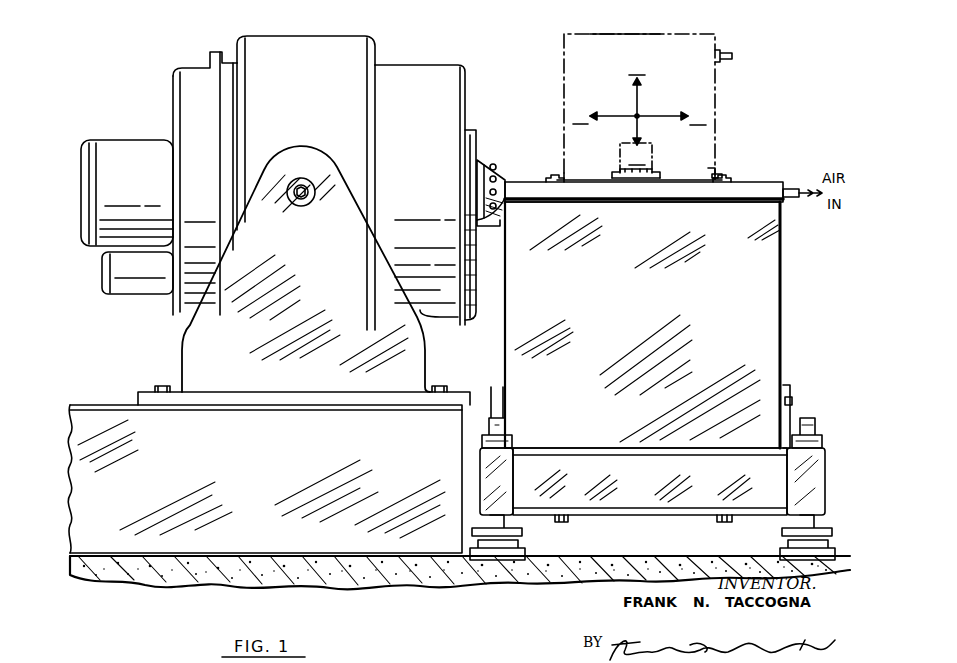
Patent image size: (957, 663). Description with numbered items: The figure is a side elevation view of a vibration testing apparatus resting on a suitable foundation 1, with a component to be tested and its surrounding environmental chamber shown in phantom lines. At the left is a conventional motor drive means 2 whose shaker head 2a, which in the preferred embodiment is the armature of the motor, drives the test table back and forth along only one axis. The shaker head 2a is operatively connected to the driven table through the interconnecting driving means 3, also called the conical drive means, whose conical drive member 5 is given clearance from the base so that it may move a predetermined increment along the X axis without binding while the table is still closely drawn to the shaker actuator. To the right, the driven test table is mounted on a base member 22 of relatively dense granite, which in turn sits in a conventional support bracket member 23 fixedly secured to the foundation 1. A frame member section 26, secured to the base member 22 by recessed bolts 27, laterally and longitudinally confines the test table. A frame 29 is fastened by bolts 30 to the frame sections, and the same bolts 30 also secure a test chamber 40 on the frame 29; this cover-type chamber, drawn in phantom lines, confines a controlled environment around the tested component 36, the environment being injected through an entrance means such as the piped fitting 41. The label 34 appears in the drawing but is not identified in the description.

The foundation 1 is at (162, 583).
The motor drive means 2 is at (312, 105).
The shaker head 2a is at (477, 152).
The interconnecting driving means 3 is at (508, 152).
The conical drive member 5 is at (498, 222).
The base member 22 is at (660, 291).
The support bracket member 23 is at (818, 416).
The frame member section 26 is at (663, 203).
The recessed bolts 27 is at (557, 178).
The frame 29 is at (730, 181).
The bolts 30 is at (718, 170).
The test specimen enclosure (phantom) 34 is at (652, 107).
The tested component 36 is at (654, 156).
The test chamber 40 is at (612, 34).
The piped fitting 41 is at (723, 53).